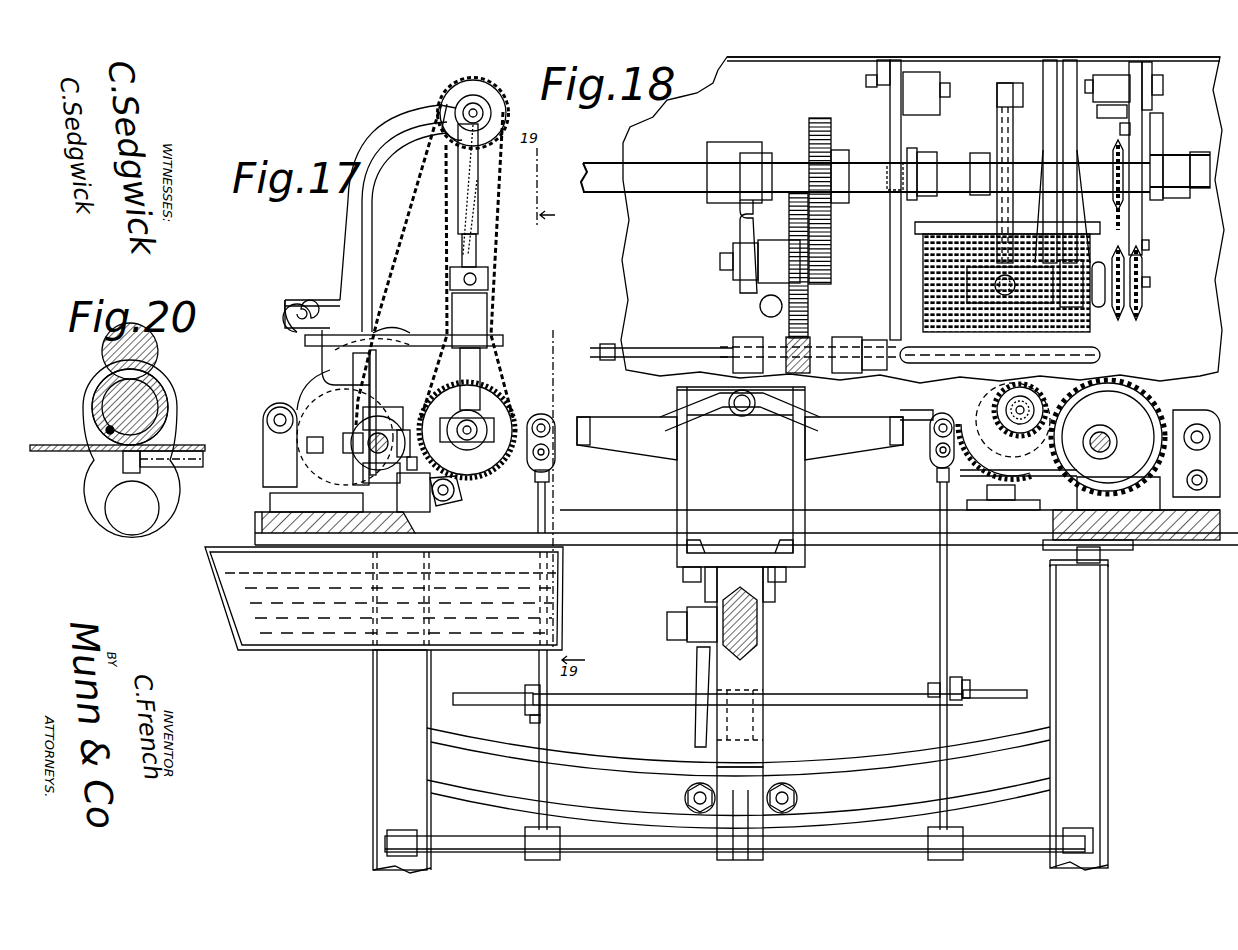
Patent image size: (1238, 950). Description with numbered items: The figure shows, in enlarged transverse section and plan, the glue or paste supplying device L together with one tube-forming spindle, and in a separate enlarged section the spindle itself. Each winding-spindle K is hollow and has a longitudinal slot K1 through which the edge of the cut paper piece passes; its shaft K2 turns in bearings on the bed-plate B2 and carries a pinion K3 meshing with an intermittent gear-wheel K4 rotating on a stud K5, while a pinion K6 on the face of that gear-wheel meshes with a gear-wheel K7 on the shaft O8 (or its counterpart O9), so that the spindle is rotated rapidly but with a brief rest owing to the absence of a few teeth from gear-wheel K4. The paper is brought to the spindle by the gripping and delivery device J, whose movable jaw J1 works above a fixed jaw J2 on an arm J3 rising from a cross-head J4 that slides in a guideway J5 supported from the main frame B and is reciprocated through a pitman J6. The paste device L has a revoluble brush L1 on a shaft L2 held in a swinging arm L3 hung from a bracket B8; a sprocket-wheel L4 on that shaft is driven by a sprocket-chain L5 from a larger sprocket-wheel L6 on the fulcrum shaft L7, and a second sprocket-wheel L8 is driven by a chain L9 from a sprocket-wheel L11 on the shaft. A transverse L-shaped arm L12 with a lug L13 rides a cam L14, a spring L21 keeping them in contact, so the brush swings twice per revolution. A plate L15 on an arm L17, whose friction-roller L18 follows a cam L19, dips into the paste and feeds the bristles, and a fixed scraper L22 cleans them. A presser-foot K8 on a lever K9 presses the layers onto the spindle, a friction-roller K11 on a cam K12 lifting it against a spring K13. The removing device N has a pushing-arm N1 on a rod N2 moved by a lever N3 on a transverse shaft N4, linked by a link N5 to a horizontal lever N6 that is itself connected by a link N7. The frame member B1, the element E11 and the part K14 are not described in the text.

In FIG. 18, the main frame B is at (870, 645).
In FIG. 18, the frame side member B1 is at (1100, 775).
In FIG. 18, the bed-plate B2 is at (1192, 540).
In FIG. 17, the bracket B8 is at (346, 248).
In FIG. 18, the bracket B8 is at (1099, 161).
In FIG. 17, the stop piece E11 is at (416, 464).
In FIG. 18, the gripping and delivery device J is at (741, 494).
In FIG. 18, the movable jaw J1 is at (636, 425).
In FIG. 18, the fixed jaw J2 is at (627, 440).
In FIG. 18, the arm J3 is at (685, 498).
In FIG. 18, the cross-head J4 is at (765, 586).
In FIG. 18, the guideway J5 is at (757, 624).
In FIG. 18, the pitman J6 is at (697, 660).
In FIG. 17, the winding-spindle K is at (541, 461).
In FIG. 18, the winding-spindle K is at (1100, 352).
In FIG. 20, the winding-spindle K is at (90, 404).
In FIG. 18, the longitudinal slot K1 is at (826, 222).
In FIG. 20, the longitudinal slot K1 is at (112, 428).
In FIG. 18, the shaft K2 is at (843, 340).
In FIG. 18, the pinion K3 is at (760, 345).
In FIG. 18, the intermittent gear-wheel K4 is at (808, 309).
In FIG. 18, the stud K5 is at (802, 260).
In FIG. 18, the pinion K6 is at (810, 288).
In FIG. 18, the gear-wheel K7 is at (1125, 385).
In FIG. 18, the presser-foot K8 is at (905, 378).
In FIG. 18, the lever K9 is at (900, 229).
In FIG. 18, the friction-roller K11 is at (898, 192).
In FIG. 18, the cam K12 is at (913, 148).
In FIG. 18, the spring K13 is at (893, 137).
In FIG. 18, the cam K14 is at (1133, 428).
In FIG. 17, the paste-supplying device L is at (442, 208).
In FIG. 18, the paste-supplying device L is at (1143, 220).
In FIG. 17, the revoluble brush L1 is at (497, 484).
In FIG. 17, the shaft L2 is at (480, 420).
In FIG. 18, the shaft L2 is at (1003, 83).
In FIG. 17, the arm L3 is at (490, 320).
In FIG. 17, the sprocket-wheel L4 is at (390, 437).
In FIG. 17, the sprocket-chain L5 is at (491, 262).
In FIG. 18, the sprocket-chain L5 is at (1144, 300).
In FIG. 17, the sprocket-wheel L6 is at (496, 100).
In FIG. 18, the sprocket-wheel L6 is at (1144, 264).
In FIG. 17, the shaft L7 is at (452, 108).
In FIG. 18, the shaft L7 is at (1150, 282).
In FIG. 18, the sprocket-wheel L8 is at (1125, 318).
In FIG. 17, the sprocket-chain L9 is at (410, 202).
In FIG. 17, the sprocket-wheel L11 is at (410, 370).
In FIG. 18, the sprocket-wheel L11 is at (1038, 249).
In FIG. 17, the L-shaped arm L12 is at (504, 344).
In FIG. 17, the lug L13 is at (296, 428).
In FIG. 17, the cam L14 is at (379, 492).
In FIG. 18, the cam L14 is at (1002, 169).
In FIG. 17, the plate L15 is at (458, 498).
In FIG. 17, the arm L17 is at (375, 417).
In FIG. 18, the arm L17 is at (1118, 143).
In FIG. 17, the friction-roller L18 is at (326, 357).
In FIG. 18, the friction-roller L18 is at (1160, 116).
In FIG. 18, the cam L19 is at (1165, 163).
In FIG. 17, the spring L21 is at (313, 326).
In FIG. 18, the fixed scraper L22 is at (1007, 267).
In FIG. 18, the removing device N is at (912, 475).
In FIG. 20, the arm N1 is at (157, 537).
In FIG. 20, the rod N2 is at (115, 520).
In FIG. 18, the lever N3 is at (552, 742).
In FIG. 18, the shaft N4 is at (640, 843).
In FIG. 18, the link N5 is at (525, 688).
In FIG. 18, the lever N6 is at (832, 706).
In FIG. 18, the link N7 is at (874, 343).
In FIG. 18, the shaft O8 is at (680, 172).
In FIG. 17, the shaft O9 is at (362, 462).